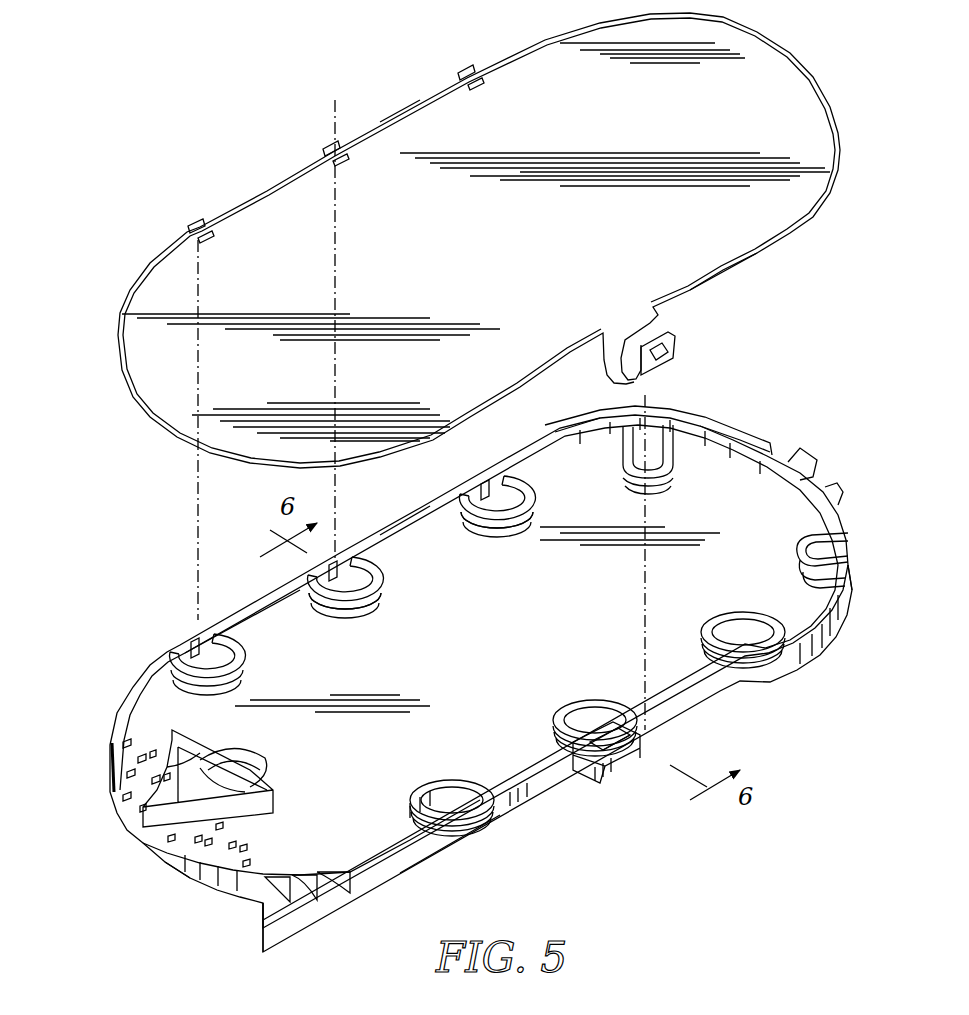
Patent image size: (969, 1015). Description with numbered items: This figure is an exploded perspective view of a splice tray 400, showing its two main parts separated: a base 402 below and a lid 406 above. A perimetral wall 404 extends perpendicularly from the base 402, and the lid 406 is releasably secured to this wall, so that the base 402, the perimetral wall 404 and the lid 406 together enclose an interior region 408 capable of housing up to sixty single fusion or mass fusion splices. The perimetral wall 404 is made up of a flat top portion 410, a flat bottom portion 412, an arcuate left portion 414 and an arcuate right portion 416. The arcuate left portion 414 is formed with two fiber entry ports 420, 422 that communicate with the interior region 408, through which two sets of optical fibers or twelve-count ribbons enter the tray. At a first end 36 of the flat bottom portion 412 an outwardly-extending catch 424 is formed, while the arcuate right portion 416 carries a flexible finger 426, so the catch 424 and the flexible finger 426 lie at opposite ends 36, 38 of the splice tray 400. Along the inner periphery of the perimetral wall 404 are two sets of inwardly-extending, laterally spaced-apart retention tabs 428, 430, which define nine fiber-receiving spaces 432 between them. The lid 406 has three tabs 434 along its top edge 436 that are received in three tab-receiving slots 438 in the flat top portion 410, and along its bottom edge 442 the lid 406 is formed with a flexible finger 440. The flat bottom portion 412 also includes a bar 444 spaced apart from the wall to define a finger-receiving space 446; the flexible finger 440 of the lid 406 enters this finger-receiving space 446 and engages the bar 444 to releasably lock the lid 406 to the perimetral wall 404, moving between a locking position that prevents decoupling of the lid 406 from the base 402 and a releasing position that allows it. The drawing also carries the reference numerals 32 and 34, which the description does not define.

The base member 32 is at (667, 857).
The lid member 34 is at (188, 178).
The first end 36 is at (117, 898).
The opposite end 38 is at (770, 412).
The splice tray 400 is at (188, 541).
The base 402 is at (750, 722).
The perimetral wall 404 is at (810, 637).
The lid 406 is at (773, 77).
The interior region 408 is at (270, 640).
The flat top portion 410 is at (397, 527).
The flat bottom portion 412 is at (453, 840).
The arcuate left portion 414 is at (207, 873).
The arcuate right portion 416 is at (835, 490).
The fiber entry port 420 is at (128, 787).
The fiber entry port 422 is at (165, 858).
The catch 424 is at (263, 940).
The flexible finger 426 is at (803, 452).
The retention tab 428 is at (537, 492).
The retention tab 430 is at (500, 547).
The fiber-receiving space 432 is at (320, 633).
The tab 434 is at (470, 67).
The top edge 436 is at (407, 115).
The tab-receiving slot 438 is at (493, 477).
The flexible finger 440 is at (670, 327).
The bottom edge 442 is at (752, 257).
The bar 444 is at (652, 770).
The finger-receiving space 446 is at (628, 785).